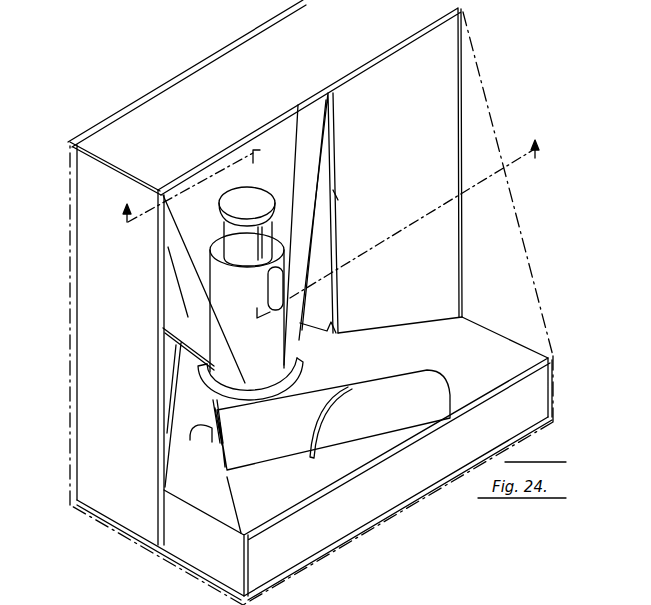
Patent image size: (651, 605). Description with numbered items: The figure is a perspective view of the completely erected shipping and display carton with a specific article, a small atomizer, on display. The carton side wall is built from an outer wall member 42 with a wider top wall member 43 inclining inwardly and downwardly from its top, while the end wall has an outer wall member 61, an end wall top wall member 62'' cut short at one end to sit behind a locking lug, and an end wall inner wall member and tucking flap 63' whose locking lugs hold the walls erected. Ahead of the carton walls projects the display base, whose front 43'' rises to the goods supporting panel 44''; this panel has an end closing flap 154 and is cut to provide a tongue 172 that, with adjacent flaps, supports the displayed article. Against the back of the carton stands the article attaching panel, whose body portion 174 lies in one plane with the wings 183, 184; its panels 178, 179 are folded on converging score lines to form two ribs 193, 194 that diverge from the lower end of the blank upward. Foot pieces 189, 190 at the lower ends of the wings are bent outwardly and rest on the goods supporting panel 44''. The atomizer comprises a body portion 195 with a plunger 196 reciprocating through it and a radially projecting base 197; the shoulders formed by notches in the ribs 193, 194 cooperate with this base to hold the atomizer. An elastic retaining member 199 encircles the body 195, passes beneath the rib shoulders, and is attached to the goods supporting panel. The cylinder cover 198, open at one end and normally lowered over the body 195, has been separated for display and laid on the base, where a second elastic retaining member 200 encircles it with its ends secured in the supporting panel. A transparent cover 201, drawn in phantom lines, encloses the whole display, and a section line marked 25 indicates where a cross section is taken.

The side wall outer wall member 42 is at (212, 58).
The side wall top wall member 43 is at (310, 162).
The end wall outer wall member 61 is at (77, 346).
The end wall top wall member 62'' is at (311, 346).
The body portion 174 is at (271, 128).
The panel 179 is at (314, 135).
The rib 194 is at (318, 180).
The end wall inner wall member and tucking flap 63' is at (355, 188).
The wing 184 is at (325, 233).
The plunger 196 is at (267, 178).
The rib 193 is at (224, 228).
The atomizer body portion 195 is at (252, 303).
The elastic retaining member 199 is at (258, 378).
The radially projecting base 197 is at (303, 366).
The panel 178 is at (167, 213).
The foot piece 190 is at (323, 305).
The goods supporting panel 44'' is at (505, 331).
The cylinder cover 198 is at (410, 380).
The elastic retaining member 200 is at (326, 408).
The wing 183 is at (172, 370).
The foot piece 189 is at (172, 422).
The tongue 172 is at (212, 452).
The closing flap 154 is at (193, 547).
The front of display base 43'' is at (398, 508).
The cover 201 is at (487, 94).
The section line A-A 25 is at (334, 219).